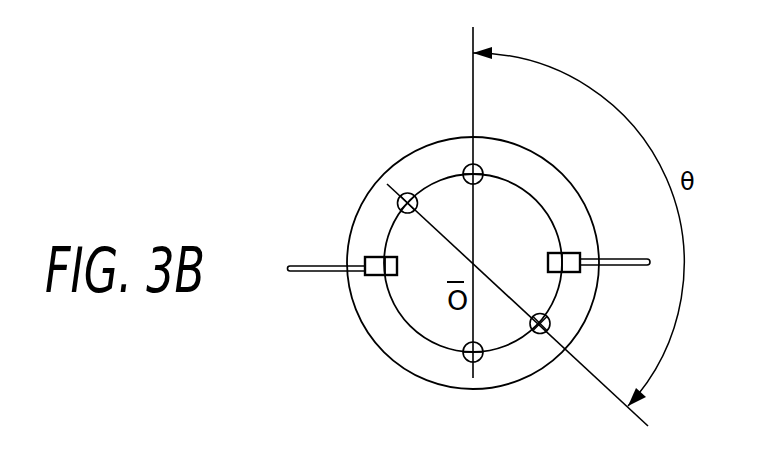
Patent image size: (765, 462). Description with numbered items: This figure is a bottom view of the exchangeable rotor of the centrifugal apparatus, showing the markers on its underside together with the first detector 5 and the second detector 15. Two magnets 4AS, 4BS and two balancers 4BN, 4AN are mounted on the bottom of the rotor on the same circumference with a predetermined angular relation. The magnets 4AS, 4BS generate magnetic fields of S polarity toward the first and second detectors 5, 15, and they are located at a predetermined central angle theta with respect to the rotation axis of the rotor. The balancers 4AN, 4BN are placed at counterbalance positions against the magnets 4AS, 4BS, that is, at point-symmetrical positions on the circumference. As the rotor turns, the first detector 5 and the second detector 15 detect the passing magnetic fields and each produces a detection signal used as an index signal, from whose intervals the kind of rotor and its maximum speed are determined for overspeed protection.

The magnet 4AS is at (470, 164).
The balancer 4AN is at (470, 362).
The balancer 4BN is at (407, 193).
The magnet 4BS is at (540, 334).
The first detector 5 is at (366, 258).
The second detector 15 is at (563, 273).